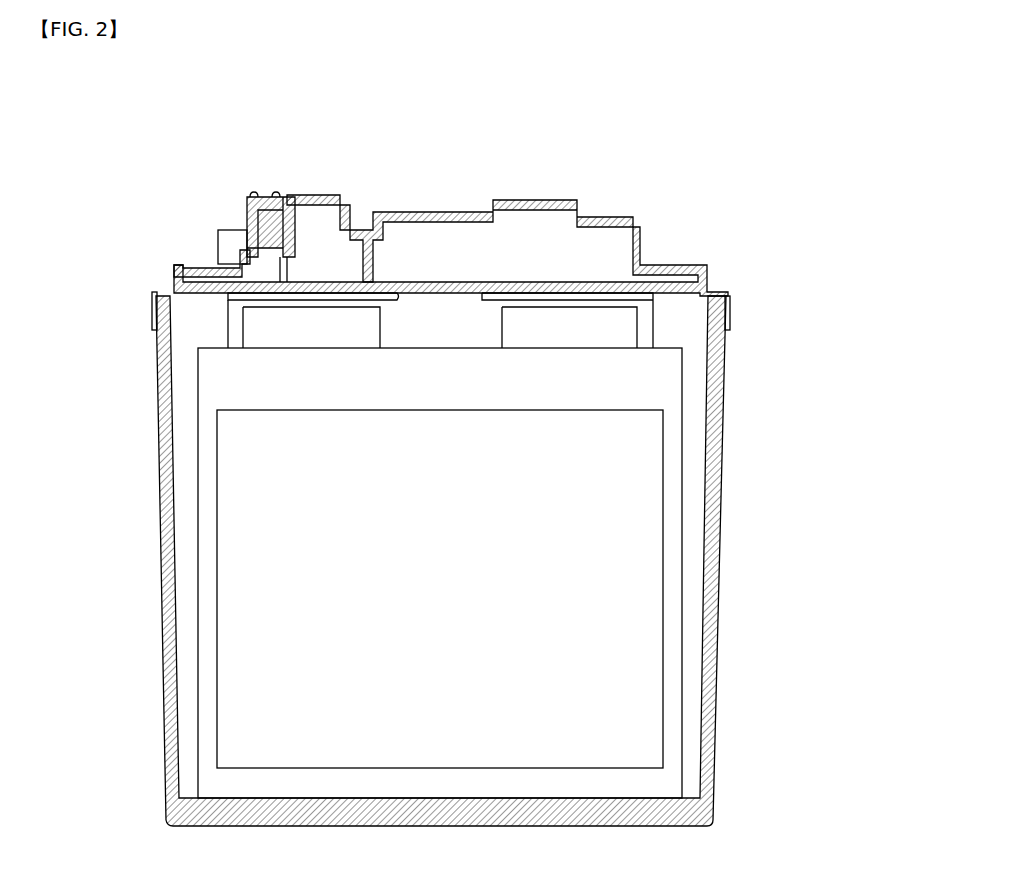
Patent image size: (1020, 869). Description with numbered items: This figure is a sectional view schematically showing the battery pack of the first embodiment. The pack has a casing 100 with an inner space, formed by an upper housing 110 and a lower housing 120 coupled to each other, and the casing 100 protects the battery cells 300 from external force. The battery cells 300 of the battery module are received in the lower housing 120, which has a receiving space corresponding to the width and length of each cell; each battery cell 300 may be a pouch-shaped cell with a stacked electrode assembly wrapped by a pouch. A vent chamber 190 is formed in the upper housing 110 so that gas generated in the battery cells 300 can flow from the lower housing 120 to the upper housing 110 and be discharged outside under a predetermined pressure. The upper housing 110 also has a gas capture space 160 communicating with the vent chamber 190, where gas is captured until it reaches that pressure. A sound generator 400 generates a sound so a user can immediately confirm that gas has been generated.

The casing 100 is at (833, 253).
The upper housing 110 is at (637, 240).
The lower housing 120 is at (718, 358).
The gas capture space 160 is at (432, 245).
The vent chamber 190 is at (265, 195).
The battery cell 300 is at (209, 601).
The sound generator 400 is at (250, 230).